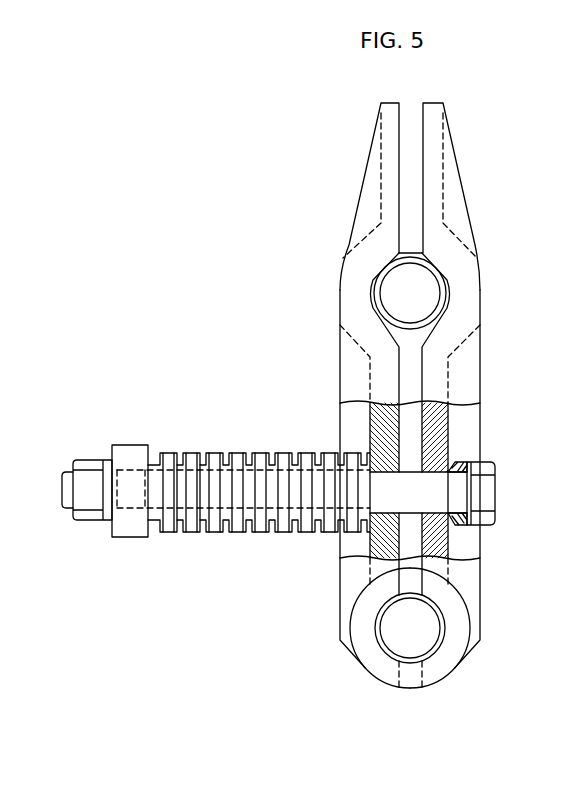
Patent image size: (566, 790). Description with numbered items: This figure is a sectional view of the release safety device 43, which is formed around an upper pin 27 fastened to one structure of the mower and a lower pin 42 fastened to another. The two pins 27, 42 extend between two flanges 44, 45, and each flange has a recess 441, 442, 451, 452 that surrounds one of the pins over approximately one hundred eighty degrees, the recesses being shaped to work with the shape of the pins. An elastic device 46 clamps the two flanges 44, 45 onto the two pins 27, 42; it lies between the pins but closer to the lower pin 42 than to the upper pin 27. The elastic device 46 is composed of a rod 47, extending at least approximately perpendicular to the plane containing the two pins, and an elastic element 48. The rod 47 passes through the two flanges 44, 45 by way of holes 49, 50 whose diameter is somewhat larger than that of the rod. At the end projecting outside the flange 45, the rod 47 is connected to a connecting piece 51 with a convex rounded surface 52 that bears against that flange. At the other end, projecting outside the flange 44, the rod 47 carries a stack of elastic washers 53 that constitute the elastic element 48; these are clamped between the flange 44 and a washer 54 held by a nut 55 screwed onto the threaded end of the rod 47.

The release safety device 43 is at (300, 263).
The flange 44 is at (370, 209).
The flange 45 is at (457, 209).
The recess 441 is at (373, 308).
The recess 451 is at (447, 308).
The upper pin 27 is at (428, 290).
The recess 442 is at (375, 628).
The recess 452 is at (445, 628).
The lower pin 42 is at (398, 647).
The elastic device 46 is at (212, 438).
The elastic washers 53 is at (276, 453).
The elastic element 48 is at (214, 542).
The washer 54 is at (128, 455).
The nut 55 is at (86, 463).
The rod 47 is at (404, 488).
The connecting piece 51 is at (460, 470).
The convex rounded surface 52 is at (452, 527).
The hole 50 is at (445, 552).
The hole 49 is at (372, 548).